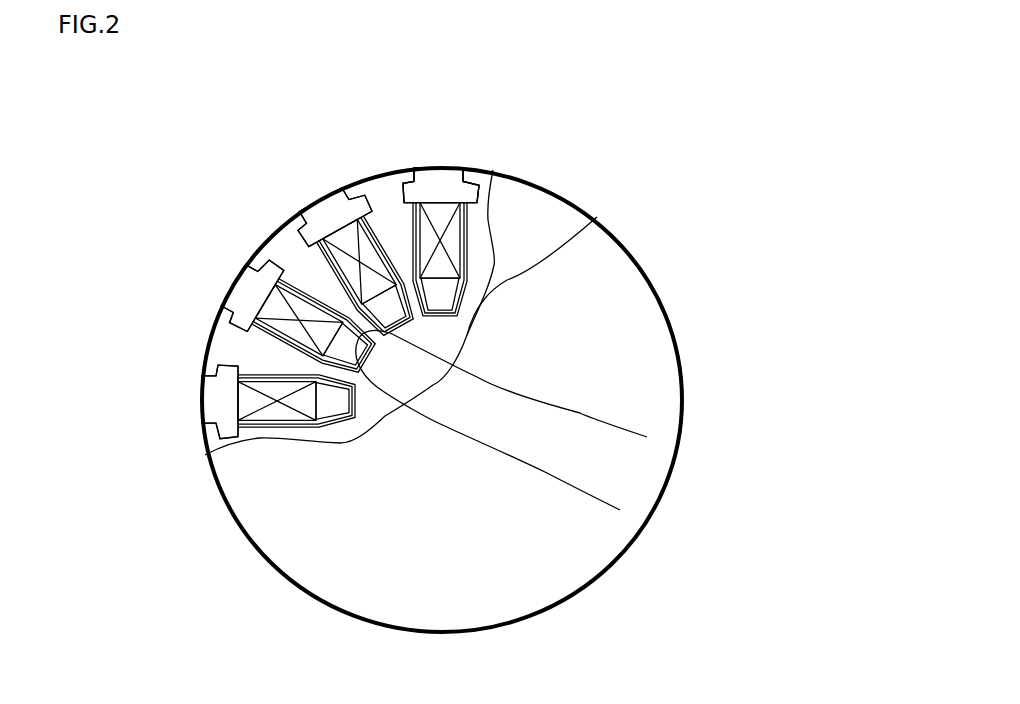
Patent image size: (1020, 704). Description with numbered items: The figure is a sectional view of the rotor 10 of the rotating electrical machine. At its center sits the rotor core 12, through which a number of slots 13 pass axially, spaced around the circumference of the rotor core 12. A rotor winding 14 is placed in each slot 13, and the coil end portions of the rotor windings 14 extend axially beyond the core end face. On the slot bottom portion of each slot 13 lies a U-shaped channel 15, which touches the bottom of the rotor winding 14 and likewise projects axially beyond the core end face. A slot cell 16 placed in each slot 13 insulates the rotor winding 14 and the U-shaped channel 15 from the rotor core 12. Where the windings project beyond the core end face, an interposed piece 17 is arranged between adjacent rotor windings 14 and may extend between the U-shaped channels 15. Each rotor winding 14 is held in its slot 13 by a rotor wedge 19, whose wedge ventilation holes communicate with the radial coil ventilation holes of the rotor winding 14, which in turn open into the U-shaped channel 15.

The rotor 10 is at (652, 272).
The rotor core 12 is at (484, 185).
The slot 13 is at (418, 204).
The rotor winding 14 is at (450, 243).
The U-shaped channel 15 is at (597, 217).
The slot cell 16 is at (372, 217).
The interposed piece 17 is at (380, 220).
The rotor wedge 19 is at (441, 185).